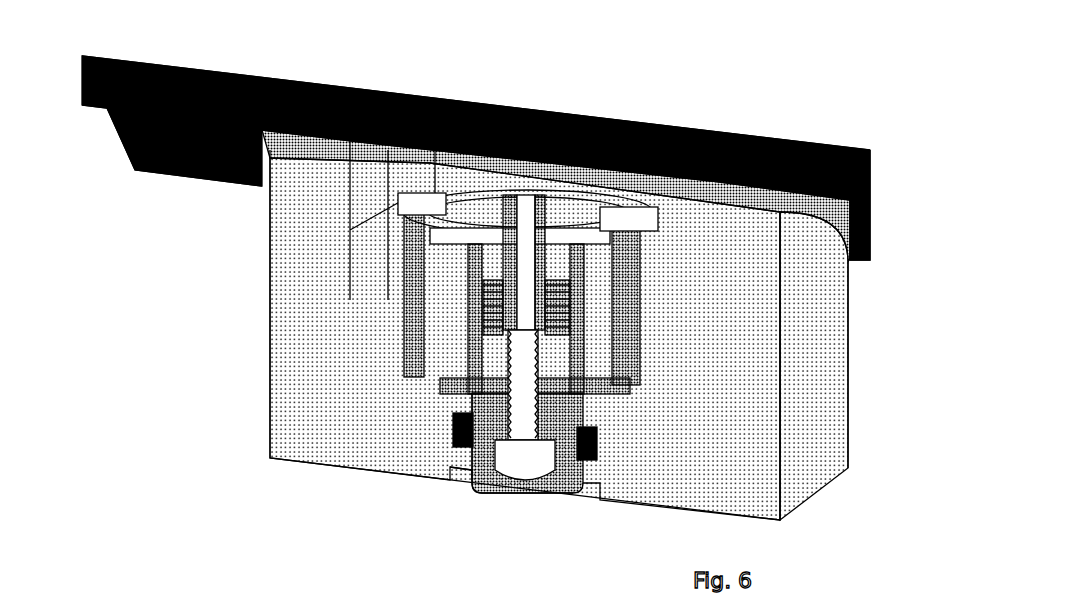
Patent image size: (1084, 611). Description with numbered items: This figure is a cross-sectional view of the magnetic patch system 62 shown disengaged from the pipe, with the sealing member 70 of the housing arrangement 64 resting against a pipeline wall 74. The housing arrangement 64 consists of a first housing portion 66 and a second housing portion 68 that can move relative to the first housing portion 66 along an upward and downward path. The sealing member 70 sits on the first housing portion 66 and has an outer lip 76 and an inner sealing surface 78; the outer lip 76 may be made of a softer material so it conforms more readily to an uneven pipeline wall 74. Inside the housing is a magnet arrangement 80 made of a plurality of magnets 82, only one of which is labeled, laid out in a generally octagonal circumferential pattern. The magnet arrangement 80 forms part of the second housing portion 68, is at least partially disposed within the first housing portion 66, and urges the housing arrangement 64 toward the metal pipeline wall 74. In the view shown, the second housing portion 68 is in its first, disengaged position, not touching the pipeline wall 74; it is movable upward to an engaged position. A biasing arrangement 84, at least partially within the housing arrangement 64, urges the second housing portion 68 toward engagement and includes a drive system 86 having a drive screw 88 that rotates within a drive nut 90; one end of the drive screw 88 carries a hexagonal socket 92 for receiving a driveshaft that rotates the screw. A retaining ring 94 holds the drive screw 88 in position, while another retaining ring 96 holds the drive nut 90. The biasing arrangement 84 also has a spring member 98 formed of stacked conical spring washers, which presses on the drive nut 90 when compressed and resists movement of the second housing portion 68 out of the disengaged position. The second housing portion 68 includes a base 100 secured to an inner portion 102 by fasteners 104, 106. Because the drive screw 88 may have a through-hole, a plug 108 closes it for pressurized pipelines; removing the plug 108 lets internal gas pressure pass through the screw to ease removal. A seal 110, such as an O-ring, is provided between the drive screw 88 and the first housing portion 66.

The magnetic patch system 62 is at (135, 325).
The housing arrangement 64 is at (866, 440).
The first housing portion 66 is at (270, 432).
The second housing portion 68 is at (380, 341).
The sealing member 70 is at (882, 205).
The pipeline wall 74 is at (165, 58).
The outer lip 76 is at (260, 184).
The inner sealing surface 78 is at (378, 90).
The magnet arrangement 80 is at (410, 305).
The magnets 82 is at (615, 325).
The biasing arrangement 84 is at (448, 443).
The drive system 86 is at (476, 492).
The drive screw 88 is at (530, 200).
The drive nut 90 is at (490, 258).
The threaded bore 92 is at (552, 490).
The retaining ring 94 is at (580, 495).
The retaining ring 96 is at (540, 238).
The spring member 98 is at (630, 287).
The base 100 is at (640, 397).
The inner portion 102 is at (612, 340).
The fastener 104 is at (440, 405).
The fastener 106 is at (582, 405).
The plug 108 is at (520, 487).
The seal 110 is at (452, 448).